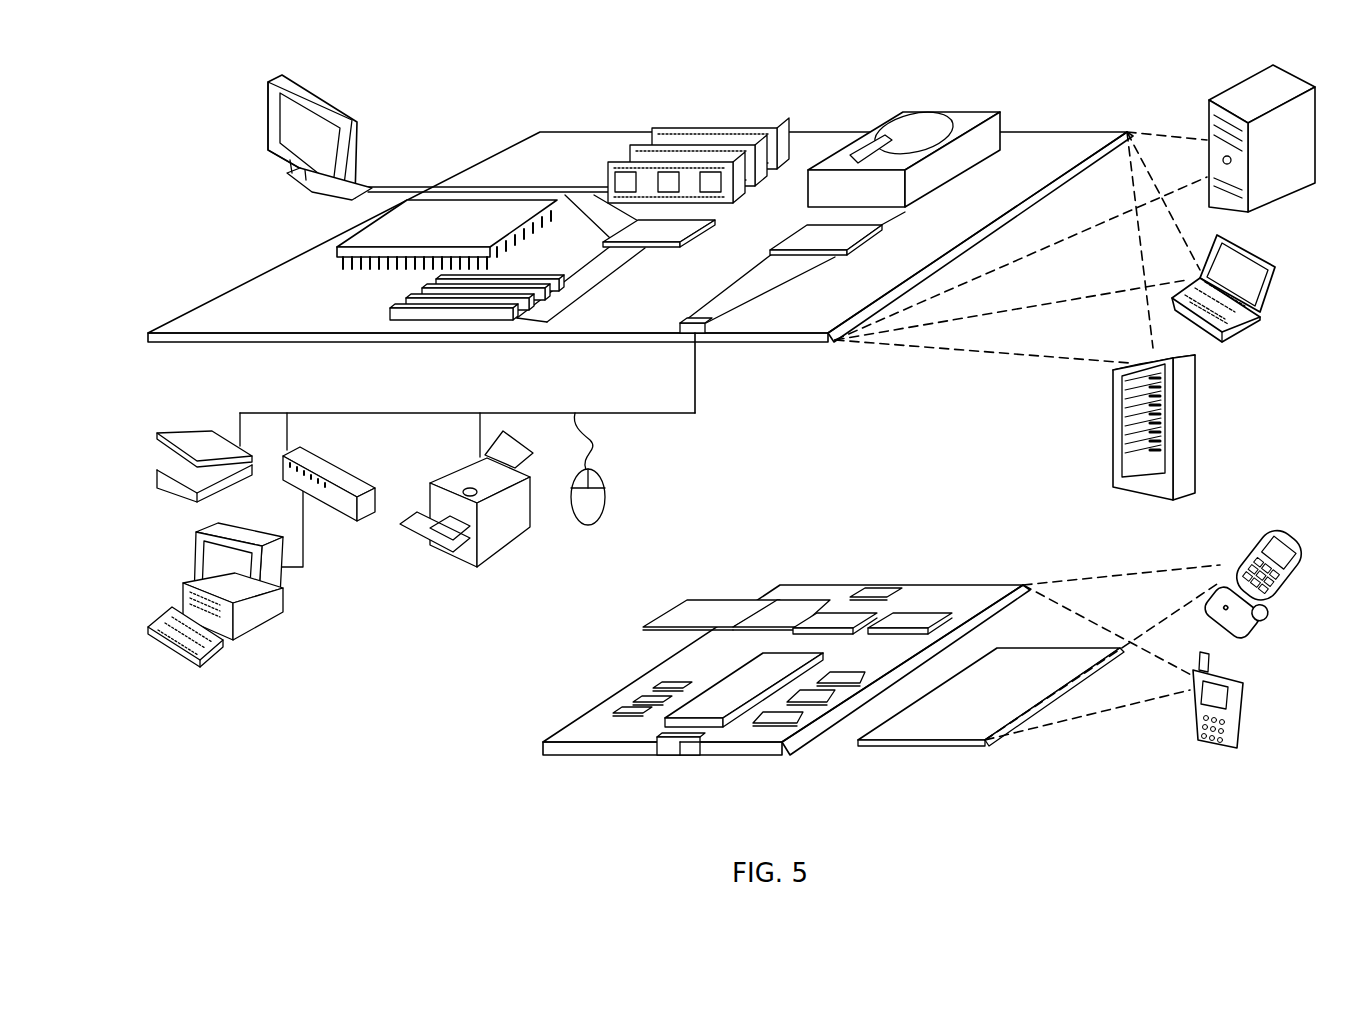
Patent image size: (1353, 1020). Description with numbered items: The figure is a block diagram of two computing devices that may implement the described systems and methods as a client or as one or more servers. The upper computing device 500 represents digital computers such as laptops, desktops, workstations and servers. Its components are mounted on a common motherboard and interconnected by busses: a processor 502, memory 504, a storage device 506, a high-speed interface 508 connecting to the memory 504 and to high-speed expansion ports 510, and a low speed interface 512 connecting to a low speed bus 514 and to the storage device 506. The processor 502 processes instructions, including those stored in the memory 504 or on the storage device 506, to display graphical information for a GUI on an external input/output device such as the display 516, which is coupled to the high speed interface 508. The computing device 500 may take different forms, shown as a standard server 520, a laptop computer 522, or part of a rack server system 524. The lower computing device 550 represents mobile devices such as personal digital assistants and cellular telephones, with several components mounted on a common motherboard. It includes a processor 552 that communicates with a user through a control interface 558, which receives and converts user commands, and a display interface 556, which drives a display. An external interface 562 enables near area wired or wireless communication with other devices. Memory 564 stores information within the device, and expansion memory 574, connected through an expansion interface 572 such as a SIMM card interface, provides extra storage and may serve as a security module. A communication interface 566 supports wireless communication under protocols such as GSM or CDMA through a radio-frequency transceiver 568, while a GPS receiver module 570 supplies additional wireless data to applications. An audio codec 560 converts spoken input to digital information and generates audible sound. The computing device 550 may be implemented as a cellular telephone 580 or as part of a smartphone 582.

The computing device 500 is at (463, 105).
The processor 502 is at (336, 247).
The memory 504 is at (665, 158).
The storage device 506 is at (898, 116).
The high-speed interface 508 is at (636, 233).
The high-speed expansion ports 510 is at (417, 303).
The low speed interface 512 is at (803, 232).
The low speed bus 514 is at (710, 334).
The display 516 is at (270, 80).
The standard server 520 is at (1208, 115).
The laptop computer 522 is at (1268, 262).
The rack server system 524 is at (1114, 454).
The computing device 550 is at (518, 752).
The processor 552 is at (718, 710).
The display interface 556 is at (784, 722).
The control interface 558 is at (816, 708).
The audio codec 560 is at (840, 694).
The external interface 562 is at (684, 737).
The memory 564 is at (632, 706).
The communication interface 566 is at (836, 617).
The transceiver 568 is at (910, 620).
The GPS receiver module 570 is at (886, 586).
The expansion interface 572 is at (762, 602).
The expansion memory 574 is at (692, 602).
The cellular telephone 580 is at (1240, 555).
The smartphone 582 is at (1192, 722).